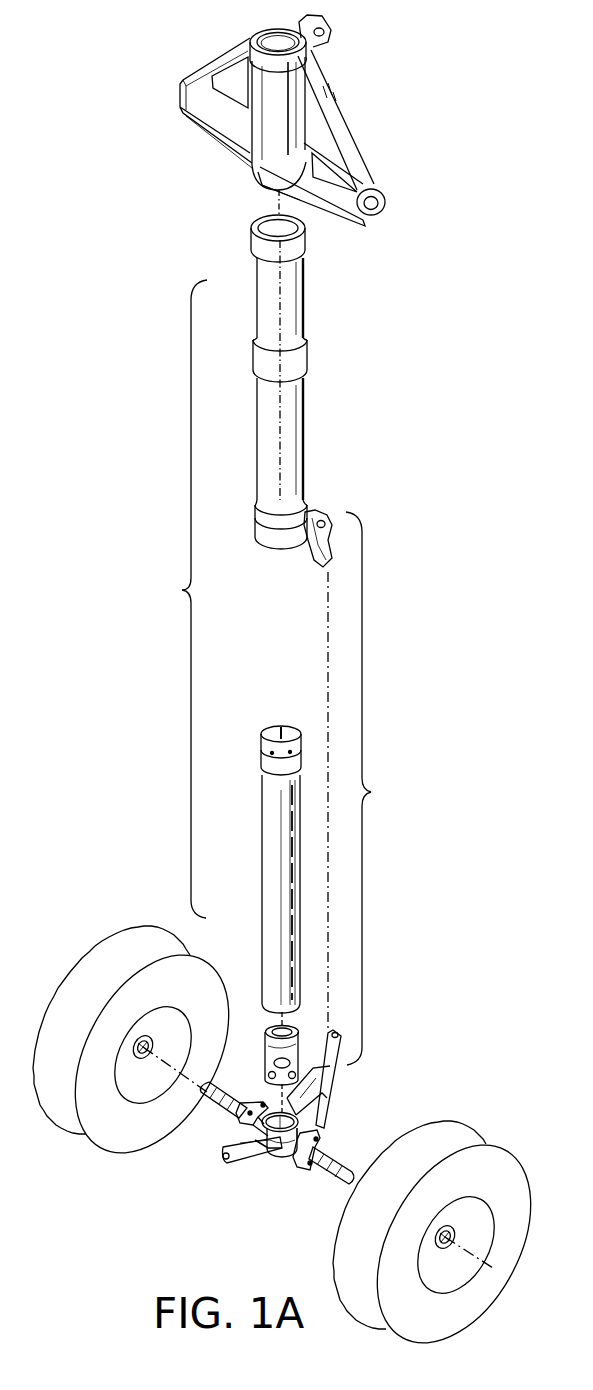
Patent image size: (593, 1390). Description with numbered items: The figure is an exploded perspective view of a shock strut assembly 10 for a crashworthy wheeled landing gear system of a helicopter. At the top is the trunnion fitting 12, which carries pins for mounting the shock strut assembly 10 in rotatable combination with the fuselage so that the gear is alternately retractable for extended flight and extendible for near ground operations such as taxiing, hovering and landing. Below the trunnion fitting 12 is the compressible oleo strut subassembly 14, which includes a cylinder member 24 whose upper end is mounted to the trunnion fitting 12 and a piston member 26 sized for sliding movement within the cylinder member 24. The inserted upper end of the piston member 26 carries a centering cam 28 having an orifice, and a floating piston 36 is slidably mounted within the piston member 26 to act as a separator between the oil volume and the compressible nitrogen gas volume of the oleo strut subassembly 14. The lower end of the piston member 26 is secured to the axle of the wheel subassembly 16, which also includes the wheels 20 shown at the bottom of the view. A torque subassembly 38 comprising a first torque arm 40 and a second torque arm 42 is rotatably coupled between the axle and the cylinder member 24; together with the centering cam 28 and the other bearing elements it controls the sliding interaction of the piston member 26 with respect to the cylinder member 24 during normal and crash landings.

The shock strut assembly 10 is at (160, 157).
The trunnion fitting 12 is at (379, 150).
The compressible oleo strut subassembly 14 is at (179, 599).
The wheel subassembly 16 is at (280, 1225).
The wheels 20 is at (100, 948).
The cylinder member 24 is at (290, 452).
The piston member 26 is at (278, 853).
The centering cam 28 is at (275, 727).
The floating piston 36 is at (264, 1041).
The torque subassembly 38 is at (376, 788).
The first torque arm 40 is at (320, 558).
The second torque arm 42 is at (326, 1082).